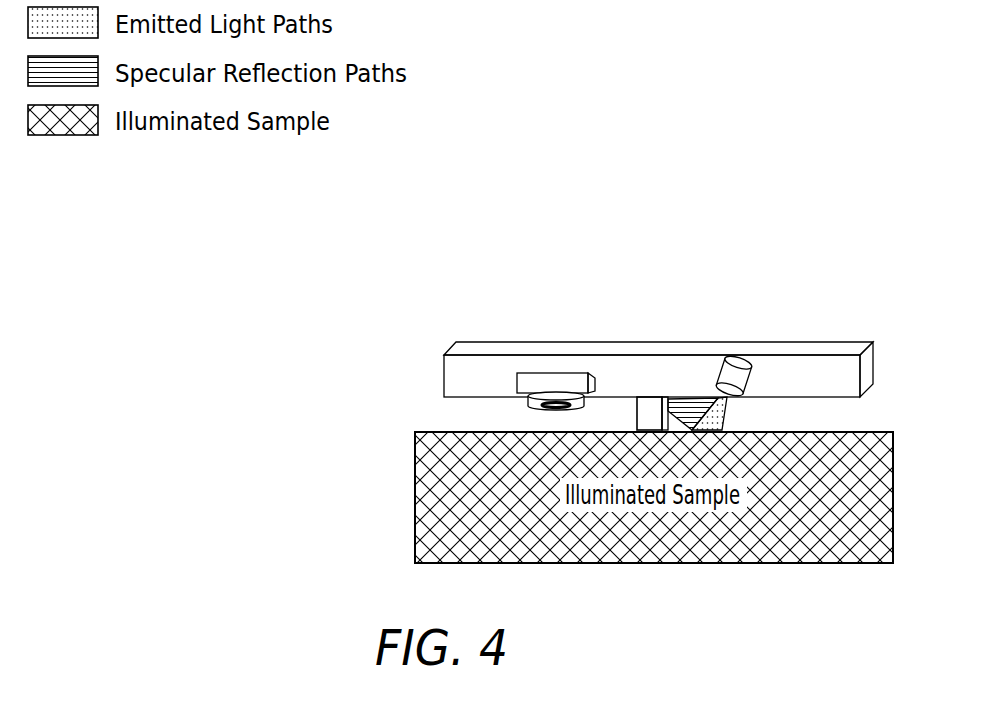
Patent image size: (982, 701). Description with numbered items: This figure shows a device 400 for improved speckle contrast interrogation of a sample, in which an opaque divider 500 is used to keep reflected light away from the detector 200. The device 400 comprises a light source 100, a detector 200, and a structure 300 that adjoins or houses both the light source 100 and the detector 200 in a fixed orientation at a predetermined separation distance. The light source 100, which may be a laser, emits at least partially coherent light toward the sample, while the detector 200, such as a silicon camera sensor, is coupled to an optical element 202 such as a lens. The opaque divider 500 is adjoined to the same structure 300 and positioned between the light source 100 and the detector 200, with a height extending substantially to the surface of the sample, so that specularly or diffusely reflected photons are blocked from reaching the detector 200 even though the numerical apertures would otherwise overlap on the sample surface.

The device 400 is at (471, 285).
The structure 300 is at (847, 350).
The detector 200 is at (572, 378).
The optical element 202 is at (533, 402).
The opaque divider 500 is at (650, 402).
The light source 100 is at (738, 365).